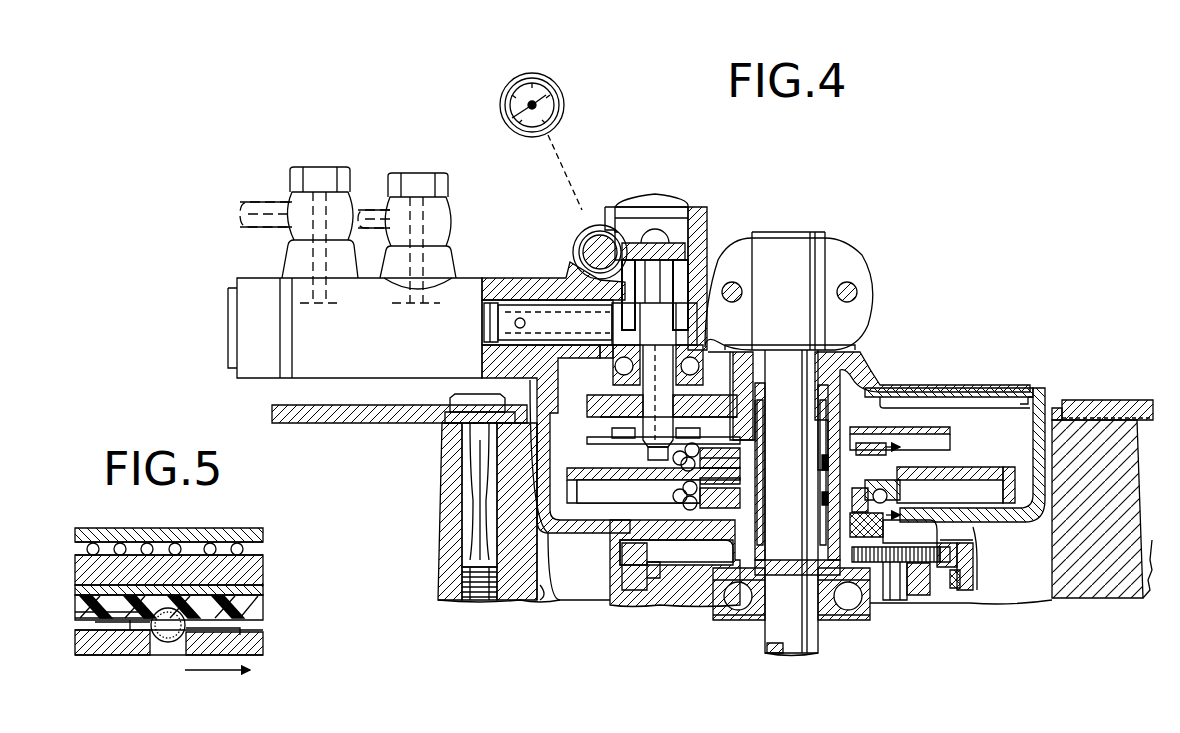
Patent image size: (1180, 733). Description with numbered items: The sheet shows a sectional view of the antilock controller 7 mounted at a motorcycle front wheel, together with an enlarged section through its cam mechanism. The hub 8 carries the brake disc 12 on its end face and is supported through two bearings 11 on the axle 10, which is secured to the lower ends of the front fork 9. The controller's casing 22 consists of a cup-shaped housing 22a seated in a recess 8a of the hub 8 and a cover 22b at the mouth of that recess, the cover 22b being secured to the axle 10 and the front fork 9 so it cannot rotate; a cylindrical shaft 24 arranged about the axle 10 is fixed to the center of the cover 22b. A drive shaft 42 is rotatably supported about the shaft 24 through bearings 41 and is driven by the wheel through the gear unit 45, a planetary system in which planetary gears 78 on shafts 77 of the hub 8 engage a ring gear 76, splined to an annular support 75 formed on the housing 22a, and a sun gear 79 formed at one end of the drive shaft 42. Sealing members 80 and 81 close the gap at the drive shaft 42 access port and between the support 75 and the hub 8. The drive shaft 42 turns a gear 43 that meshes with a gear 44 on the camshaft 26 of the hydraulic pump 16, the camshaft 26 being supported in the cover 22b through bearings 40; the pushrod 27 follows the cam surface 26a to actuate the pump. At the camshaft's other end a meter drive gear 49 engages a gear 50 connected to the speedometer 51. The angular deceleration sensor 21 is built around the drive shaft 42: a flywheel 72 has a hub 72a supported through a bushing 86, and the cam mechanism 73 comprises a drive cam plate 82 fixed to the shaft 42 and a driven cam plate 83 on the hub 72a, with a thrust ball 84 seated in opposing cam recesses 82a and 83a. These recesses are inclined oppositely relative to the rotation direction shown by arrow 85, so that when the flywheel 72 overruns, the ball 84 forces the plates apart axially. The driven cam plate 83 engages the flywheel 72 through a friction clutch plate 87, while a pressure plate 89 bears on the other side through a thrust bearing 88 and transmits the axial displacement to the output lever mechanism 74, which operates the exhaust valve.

In FIG. 4, the antilock controller 7 is at (520, 274).
In FIG. 4, the hub 8 is at (446, 492).
In FIG. 4, the recess 8a is at (537, 600).
In FIG. 4, the front fork 9 is at (856, 270).
In FIG. 4, the axle 10 is at (797, 574).
In FIG. 4, the bearings 11 is at (738, 605).
In FIG. 4, the brake disc 12 is at (330, 423).
In FIG. 4, the hydraulic pump 16 is at (480, 322).
In FIG. 4, the angular deceleration sensor 21 is at (978, 462).
In FIG. 4, the casing 22 is at (1058, 355).
In FIG. 4, the cup-shaped housing 22a is at (1042, 390).
In FIG. 4, the cover 22b is at (998, 388).
In FIG. 4, the cylindrical shaft 24 is at (758, 393).
In FIG. 4, the camshaft 26 is at (658, 402).
In FIG. 4, the cam surface 26a is at (614, 323).
In FIG. 4, the pushrod 27 is at (527, 296).
In FIG. 4, the bearings 40 is at (704, 288).
In FIG. 4, the bearings 41 is at (826, 446).
In FIG. 4, the drive shaft 42 is at (826, 415).
In FIG. 4, the gear 43 is at (860, 382).
In FIG. 4, the gear 44 is at (585, 410).
In FIG. 4, the gear unit 45 is at (973, 545).
In FIG. 4, the meter drive gear 49 is at (690, 266).
In FIG. 4, the gear 50 is at (590, 230).
In FIG. 4, the speedometer 51 is at (565, 110).
In FIG. 4, the flywheel 72 is at (1010, 470).
In FIG. 5, the flywheel 72 is at (258, 572).
In FIG. 4, the hub 72a is at (828, 500).
In FIG. 4, the cam mechanism 73 is at (900, 493).
In FIG. 5, the cam mechanism 73 is at (266, 611).
In FIG. 4, the output lever mechanism 74 is at (886, 436).
In FIG. 4, the annular support 75 is at (973, 582).
In FIG. 4, the ring gear 76 is at (973, 563).
In FIG. 4, the shafts 77 is at (893, 600).
In FIG. 4, the planetary gears 78 is at (912, 562).
In FIG. 4, the sun gear 79 is at (705, 562).
In FIG. 4, the sealing member 80 is at (660, 555).
In FIG. 4, the sealing member 81 is at (632, 590).
In FIG. 4, the drive cam plate 82 is at (686, 508).
In FIG. 5, the drive cam plate 82 is at (80, 640).
In FIG. 5, the cam recess 82a is at (190, 632).
In FIG. 4, the driven cam plate 83 is at (686, 490).
In FIG. 5, the driven cam plate 83 is at (80, 606).
In FIG. 5, the cam recess 83a is at (130, 635).
In FIG. 4, the thrust ball 84 is at (890, 494).
In FIG. 5, the thrust ball 84 is at (166, 640).
In FIG. 5, the arrow 85 is at (222, 672).
In FIG. 4, the bushing 86 is at (828, 460).
In FIG. 4, the friction clutch plate 87 is at (735, 482).
In FIG. 5, the friction clutch plate 87 is at (262, 589).
In FIG. 5, the thrust bearing 88 is at (240, 545).
In FIG. 4, the pressure plate 89 is at (866, 445).
In FIG. 5, the pressure plate 89 is at (200, 530).